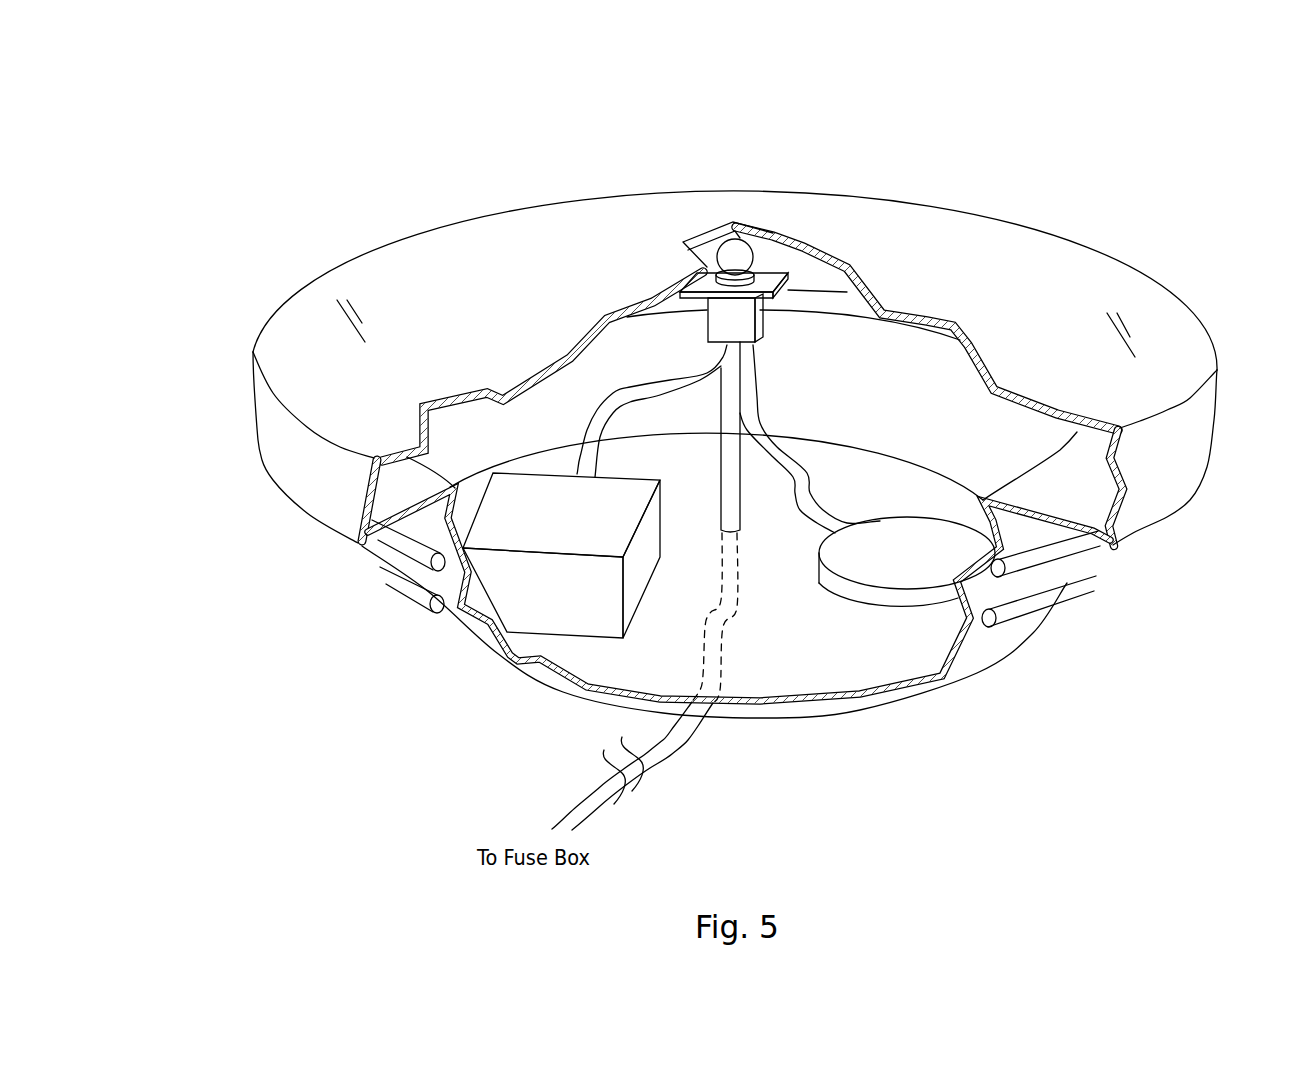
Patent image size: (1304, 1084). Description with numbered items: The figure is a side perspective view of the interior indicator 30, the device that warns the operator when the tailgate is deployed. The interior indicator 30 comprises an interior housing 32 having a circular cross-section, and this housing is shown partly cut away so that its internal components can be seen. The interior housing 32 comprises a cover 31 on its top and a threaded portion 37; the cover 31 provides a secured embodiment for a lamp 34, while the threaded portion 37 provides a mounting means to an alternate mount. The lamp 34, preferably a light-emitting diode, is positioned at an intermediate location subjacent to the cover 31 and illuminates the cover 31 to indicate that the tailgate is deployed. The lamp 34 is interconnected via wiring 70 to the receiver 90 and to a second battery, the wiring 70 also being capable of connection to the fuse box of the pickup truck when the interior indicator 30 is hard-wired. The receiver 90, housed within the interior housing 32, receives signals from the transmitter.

The interior indicator 30 is at (188, 156).
The cover 31 is at (475, 235).
The interior housing 32 is at (307, 442).
The lamp 34 is at (740, 250).
The threaded portion 37 is at (420, 588).
The wiring 70 is at (905, 548).
The receiver 90 is at (523, 605).